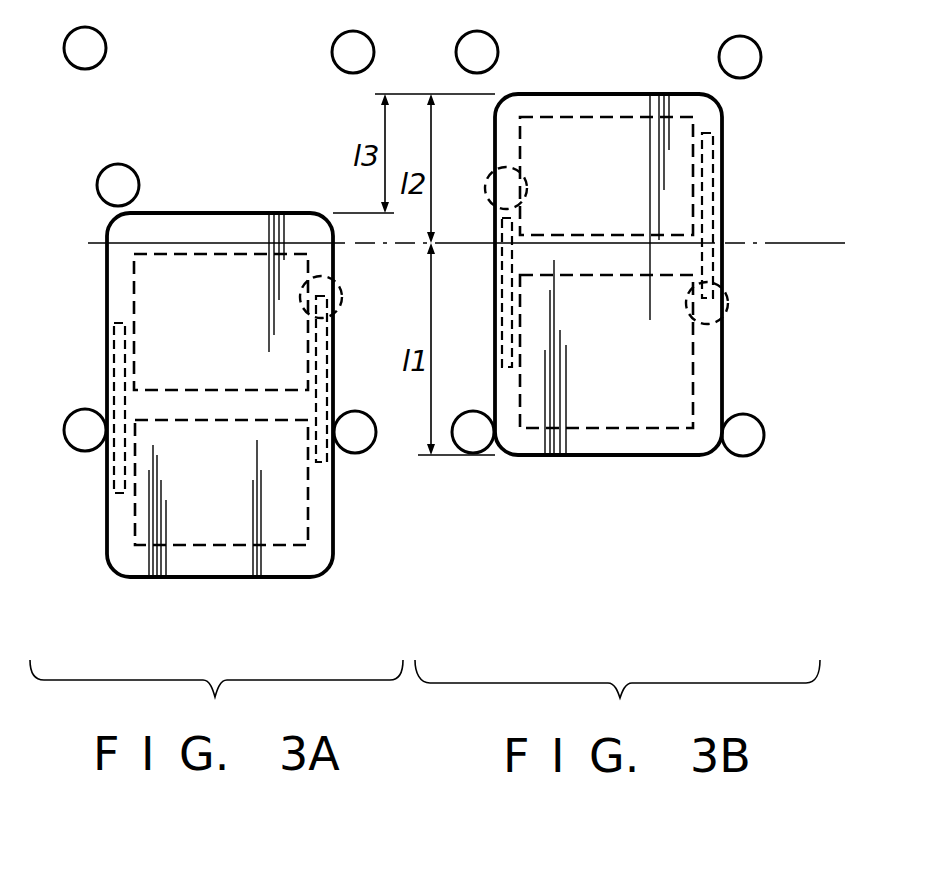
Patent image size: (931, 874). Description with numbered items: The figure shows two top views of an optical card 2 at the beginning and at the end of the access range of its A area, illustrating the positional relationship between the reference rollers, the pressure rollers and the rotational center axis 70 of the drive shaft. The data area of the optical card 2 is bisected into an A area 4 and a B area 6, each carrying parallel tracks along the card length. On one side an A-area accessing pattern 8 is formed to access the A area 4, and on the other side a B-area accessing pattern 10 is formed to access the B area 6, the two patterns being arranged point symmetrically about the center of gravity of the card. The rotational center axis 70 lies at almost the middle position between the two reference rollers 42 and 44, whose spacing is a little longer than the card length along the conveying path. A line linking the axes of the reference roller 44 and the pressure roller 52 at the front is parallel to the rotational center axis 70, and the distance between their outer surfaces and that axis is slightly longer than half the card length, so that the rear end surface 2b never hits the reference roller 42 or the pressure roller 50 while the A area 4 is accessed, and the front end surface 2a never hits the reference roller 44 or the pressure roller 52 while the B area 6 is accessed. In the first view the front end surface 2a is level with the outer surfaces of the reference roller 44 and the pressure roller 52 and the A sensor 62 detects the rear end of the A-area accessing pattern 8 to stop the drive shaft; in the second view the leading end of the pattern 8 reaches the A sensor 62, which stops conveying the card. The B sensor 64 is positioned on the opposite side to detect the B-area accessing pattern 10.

In FIG. 3A, the optical card 2 is at (220, 421).
In FIG. 3B, the optical card 2 is at (608, 252).
In FIG. 3A, the front end surface 2a is at (220, 603).
In FIG. 3B, the front end surface 2a is at (609, 485).
In FIG. 3A, the rear end surface 2b is at (220, 188).
In FIG. 3B, the rear end surface 2b is at (609, 71).
In FIG. 3A, the A area 4 is at (221, 322).
In FIG. 3B, the A area 4 is at (606, 176).
In FIG. 3A, the B area 6 is at (221, 482).
In FIG. 3B, the B area 6 is at (606, 351).
In FIG. 3A, the A-area accessing pattern 8 is at (350, 365).
In FIG. 3B, the A-area accessing pattern 8 is at (732, 203).
In FIG. 3A, the B-area accessing pattern 10 is at (91, 431).
In FIG. 3B, the B-area accessing pattern 10 is at (476, 300).
In FIG. 3A, the reference roller 42 is at (102, 34).
In FIG. 3B, the reference roller 42 is at (493, 36).
In FIG. 3A, the reference roller 44 is at (79, 407).
In FIG. 3B, the reference roller 44 is at (472, 459).
In FIG. 3A, the pressure roller 50 is at (370, 36).
In FIG. 3B, the pressure roller 50 is at (754, 39).
In FIG. 3A, the pressure roller 52 is at (362, 459).
In FIG. 3B, the pressure roller 52 is at (749, 460).
In FIG. 3A, the A sensor 62 is at (340, 324).
In FIG. 3B, the A sensor 62 is at (730, 312).
In FIG. 3A, the B sensor 64 is at (127, 159).
In FIG. 3B, the B sensor 64 is at (485, 161).
In FIG. 3B, the rotational center axis 70 is at (640, 210).